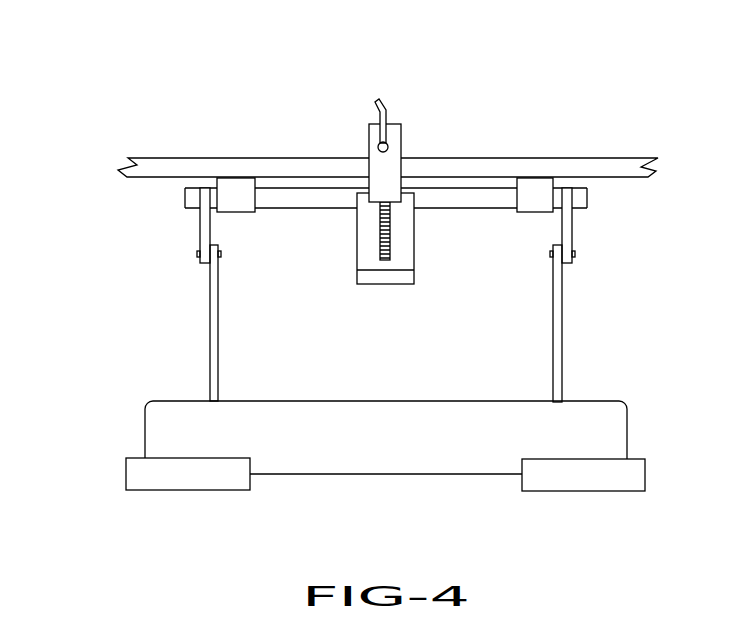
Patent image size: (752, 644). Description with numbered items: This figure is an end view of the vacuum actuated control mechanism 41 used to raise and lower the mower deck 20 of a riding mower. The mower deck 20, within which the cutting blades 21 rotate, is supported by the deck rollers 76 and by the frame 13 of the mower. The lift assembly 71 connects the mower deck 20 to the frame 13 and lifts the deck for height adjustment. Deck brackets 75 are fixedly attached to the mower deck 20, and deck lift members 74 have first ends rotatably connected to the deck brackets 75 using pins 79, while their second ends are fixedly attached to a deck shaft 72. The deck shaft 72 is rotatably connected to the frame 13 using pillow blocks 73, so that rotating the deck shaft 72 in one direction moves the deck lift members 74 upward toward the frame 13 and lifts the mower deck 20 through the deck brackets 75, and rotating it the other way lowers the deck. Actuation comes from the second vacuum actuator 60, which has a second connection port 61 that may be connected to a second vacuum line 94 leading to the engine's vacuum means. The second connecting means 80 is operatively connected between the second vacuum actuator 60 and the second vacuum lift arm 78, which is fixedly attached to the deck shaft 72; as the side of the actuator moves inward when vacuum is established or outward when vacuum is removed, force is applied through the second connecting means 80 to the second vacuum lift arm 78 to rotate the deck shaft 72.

The frame 13 is at (180, 157).
The mower deck 20 is at (370, 451).
The cutting blades 21 is at (364, 496).
The vacuum actuated control mechanism 41 is at (243, 65).
The second vacuum actuator 60 is at (401, 138).
The second connection port 61 is at (378, 142).
The lift assembly 71 is at (127, 375).
The deck shaft 72 is at (308, 197).
The pillow blocks 73 is at (237, 197).
The deck lift members 74 is at (200, 227).
The deck brackets 75 is at (210, 333).
The deck rollers 76 is at (158, 481).
The second vacuum lift arm 78 is at (398, 279).
The pins 79 is at (198, 254).
The second connecting means 80 is at (390, 243).
The second vacuum line 94 is at (382, 107).